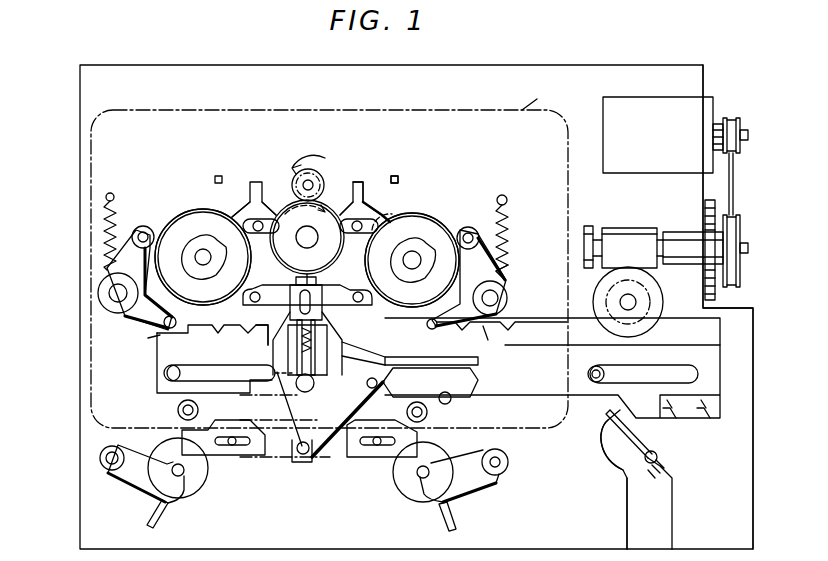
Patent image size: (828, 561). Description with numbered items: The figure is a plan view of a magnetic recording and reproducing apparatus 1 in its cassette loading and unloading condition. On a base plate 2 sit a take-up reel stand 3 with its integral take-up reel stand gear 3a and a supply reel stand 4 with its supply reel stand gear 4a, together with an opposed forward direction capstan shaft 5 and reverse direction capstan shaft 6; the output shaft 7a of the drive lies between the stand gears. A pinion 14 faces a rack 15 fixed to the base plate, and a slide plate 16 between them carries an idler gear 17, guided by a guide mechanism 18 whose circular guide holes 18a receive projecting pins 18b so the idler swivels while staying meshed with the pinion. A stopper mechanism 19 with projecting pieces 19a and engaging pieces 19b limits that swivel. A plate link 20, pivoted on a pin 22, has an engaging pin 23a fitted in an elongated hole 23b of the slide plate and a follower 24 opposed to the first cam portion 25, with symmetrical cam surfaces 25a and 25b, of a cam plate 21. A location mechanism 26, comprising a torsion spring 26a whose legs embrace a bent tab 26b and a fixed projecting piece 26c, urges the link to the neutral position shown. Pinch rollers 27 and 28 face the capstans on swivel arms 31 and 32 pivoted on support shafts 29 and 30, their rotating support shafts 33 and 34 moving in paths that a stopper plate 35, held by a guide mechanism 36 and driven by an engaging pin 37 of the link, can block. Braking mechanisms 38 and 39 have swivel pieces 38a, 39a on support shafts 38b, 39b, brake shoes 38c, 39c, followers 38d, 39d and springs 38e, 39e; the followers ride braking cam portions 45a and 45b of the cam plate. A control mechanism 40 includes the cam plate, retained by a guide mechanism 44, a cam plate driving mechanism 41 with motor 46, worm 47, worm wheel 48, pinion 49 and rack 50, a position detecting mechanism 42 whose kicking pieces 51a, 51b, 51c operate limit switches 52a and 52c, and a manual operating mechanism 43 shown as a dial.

The magnetic recording and reproducing apparatus 1 is at (650, 65).
The base plate 2 is at (571, 65).
The take-up reel stand 3 is at (418, 283).
The take-up reel stand gear 3a is at (438, 221).
The supply reel stand 4 is at (188, 244).
The supply reel stand gear 4a is at (196, 212).
The forward direction capstan shaft 5 is at (428, 412).
The reverse direction capstan shaft 6 is at (178, 411).
The output shaft 7a is at (312, 184).
The pinion 14 is at (292, 186).
The rack 15 is at (307, 274).
The slide plate 16 is at (389, 222).
The idler gear 17 is at (332, 214).
The guide mechanism 18 is at (289, 150).
The circular guide holes 18a is at (243, 217).
The projecting pins 18b is at (262, 220).
The stopper mechanism 19 is at (439, 150).
The projecting pieces 19a is at (370, 218).
The engaging pieces 19b is at (399, 177).
The plate link 20 is at (292, 457).
The cam plate 21 is at (535, 396).
The pin 22 is at (303, 393).
The engaging pin 23a is at (326, 306).
The elongated hole 23b is at (330, 340).
The follower 24 is at (375, 390).
The first cam portion 25 is at (437, 388).
The cam surface 25a is at (455, 396).
The cam surface 25b is at (480, 361).
The location mechanism 26 is at (283, 386).
The torsion spring 26a is at (318, 394).
The bent tab 26b is at (265, 334).
The fixed projecting piece 26c is at (366, 336).
The pinch roller 27 is at (410, 500).
The pinch roller 28 is at (178, 499).
The support shaft 29 is at (510, 462).
The support shaft 30 is at (108, 470).
The swivel arm 31 is at (460, 512).
The swivel arm 32 is at (150, 505).
The rotating support shaft 33 is at (418, 477).
The rotating support shaft 34 is at (184, 476).
The stopper plate 35 is at (355, 457).
The guide mechanism 36 is at (235, 457).
The engaging pin 37 is at (300, 464).
The braking mechanism 38 is at (523, 228).
The swivel piece 38a is at (506, 262).
The support shaft 38b is at (508, 296).
The brake shoe 38c is at (468, 227).
The follower 38d is at (438, 330).
The spring 38e is at (509, 204).
The braking mechanism 39 is at (97, 207).
The swivel piece 39a is at (150, 320).
The support shaft 39b is at (108, 293).
The brake shoe 39c is at (143, 226).
The follower 39d is at (165, 332).
The spring 39e is at (104, 225).
The control mechanism 40 is at (749, 366).
The cam plate driving mechanism 41 is at (616, 228).
The position detecting mechanism 42 is at (670, 512).
The manual operating mechanism 43 is at (715, 209).
The guide mechanism 44 is at (592, 384).
The braking cam portion 45a is at (496, 326).
The braking cam portion 45b is at (162, 345).
The motor 46 is at (703, 98).
The worm 47 is at (668, 232).
The worm wheel 48 is at (662, 299).
The pinion 49 is at (640, 305).
The rack 50 is at (596, 366).
The kicking piece 51a is at (633, 415).
The kicking piece 51b is at (658, 457).
The kicking piece 51c is at (702, 418).
The limit switch 52a is at (622, 426).
The limit switch 52c is at (588, 450).